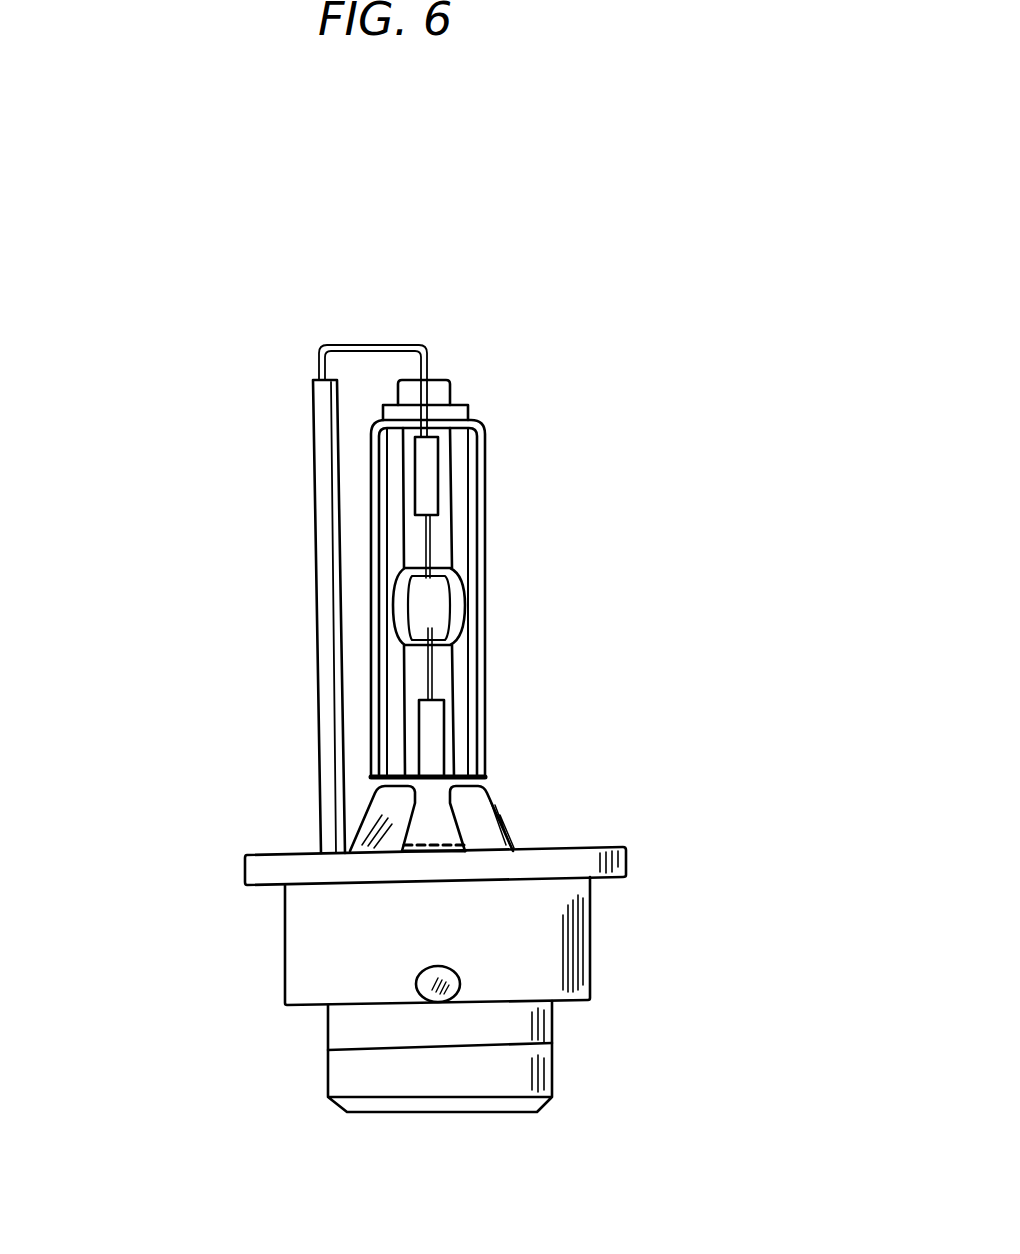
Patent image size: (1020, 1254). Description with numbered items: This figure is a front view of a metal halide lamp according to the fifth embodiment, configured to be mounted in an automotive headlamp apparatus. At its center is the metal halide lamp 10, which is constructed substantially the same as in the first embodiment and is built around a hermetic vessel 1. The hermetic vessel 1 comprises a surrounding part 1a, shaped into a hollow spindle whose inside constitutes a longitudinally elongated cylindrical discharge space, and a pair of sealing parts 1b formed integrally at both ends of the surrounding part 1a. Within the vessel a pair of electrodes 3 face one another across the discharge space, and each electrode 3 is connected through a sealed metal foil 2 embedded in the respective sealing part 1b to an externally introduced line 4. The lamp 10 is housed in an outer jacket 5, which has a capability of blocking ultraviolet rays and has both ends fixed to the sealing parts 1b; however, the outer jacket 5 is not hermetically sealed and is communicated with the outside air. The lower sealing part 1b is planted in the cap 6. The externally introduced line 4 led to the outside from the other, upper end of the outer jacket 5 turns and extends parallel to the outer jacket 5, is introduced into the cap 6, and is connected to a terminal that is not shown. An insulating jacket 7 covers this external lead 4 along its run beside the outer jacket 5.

The hermetic vessel 1 is at (462, 626).
The surrounding part 1a is at (397, 623).
The sealing part 1b is at (403, 495).
The sealed metal foil 2 is at (432, 470).
The electrode 3 is at (436, 578).
The externally introduced line 4 is at (367, 345).
The outer jacket 5 is at (488, 563).
The cap 6 is at (590, 935).
The insulating jacket 7 is at (313, 560).
The metal halide lamp 10 is at (456, 565).